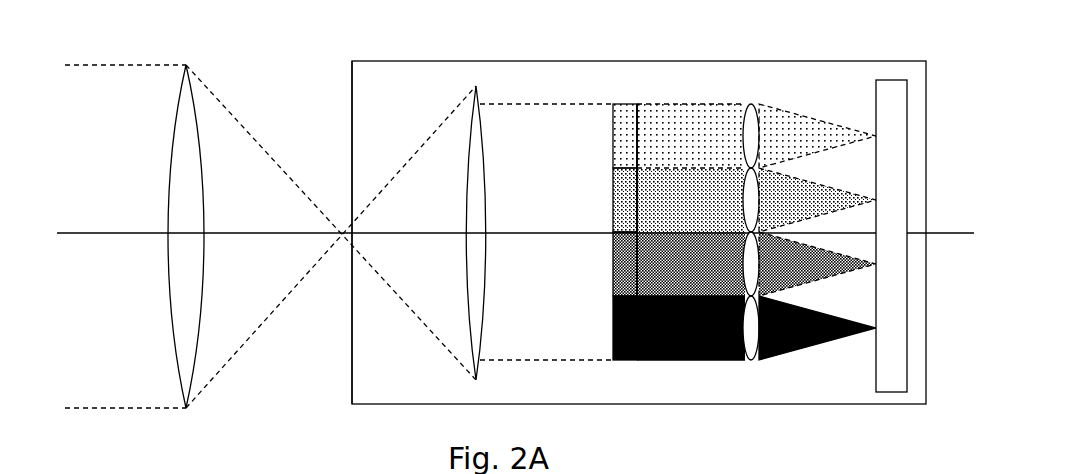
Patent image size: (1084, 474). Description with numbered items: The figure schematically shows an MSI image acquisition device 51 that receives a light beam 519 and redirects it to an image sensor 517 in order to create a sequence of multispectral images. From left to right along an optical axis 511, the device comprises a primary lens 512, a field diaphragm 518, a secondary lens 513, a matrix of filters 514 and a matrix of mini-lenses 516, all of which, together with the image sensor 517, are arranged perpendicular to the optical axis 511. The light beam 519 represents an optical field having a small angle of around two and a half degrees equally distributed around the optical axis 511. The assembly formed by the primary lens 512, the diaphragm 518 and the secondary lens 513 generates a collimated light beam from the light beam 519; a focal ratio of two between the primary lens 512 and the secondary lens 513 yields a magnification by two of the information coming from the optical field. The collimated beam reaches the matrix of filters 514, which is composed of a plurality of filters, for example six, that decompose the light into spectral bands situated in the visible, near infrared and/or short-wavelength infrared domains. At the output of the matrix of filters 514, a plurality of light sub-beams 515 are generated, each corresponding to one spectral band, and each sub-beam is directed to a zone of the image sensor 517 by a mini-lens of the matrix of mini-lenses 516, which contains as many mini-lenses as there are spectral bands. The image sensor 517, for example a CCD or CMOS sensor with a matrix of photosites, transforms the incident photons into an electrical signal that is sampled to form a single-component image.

The MSI image acquisition device 51 is at (536, 50).
The optical axis 511 is at (82, 231).
The primary lens 512 is at (186, 63).
The secondary lens 513 is at (486, 197).
The matrix of filters 514 is at (628, 103).
The light sub-beams 515 is at (692, 103).
The matrix of mini-lenses 516 is at (755, 103).
The image sensor 517 is at (892, 80).
The field diaphragm 518 is at (352, 180).
The light beam 519 is at (112, 63).